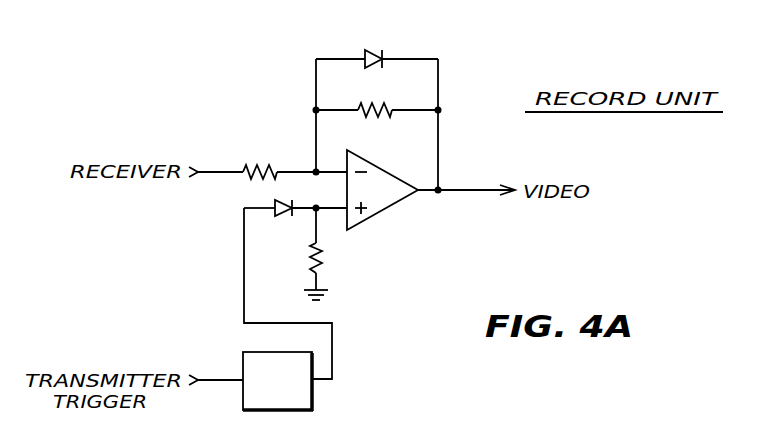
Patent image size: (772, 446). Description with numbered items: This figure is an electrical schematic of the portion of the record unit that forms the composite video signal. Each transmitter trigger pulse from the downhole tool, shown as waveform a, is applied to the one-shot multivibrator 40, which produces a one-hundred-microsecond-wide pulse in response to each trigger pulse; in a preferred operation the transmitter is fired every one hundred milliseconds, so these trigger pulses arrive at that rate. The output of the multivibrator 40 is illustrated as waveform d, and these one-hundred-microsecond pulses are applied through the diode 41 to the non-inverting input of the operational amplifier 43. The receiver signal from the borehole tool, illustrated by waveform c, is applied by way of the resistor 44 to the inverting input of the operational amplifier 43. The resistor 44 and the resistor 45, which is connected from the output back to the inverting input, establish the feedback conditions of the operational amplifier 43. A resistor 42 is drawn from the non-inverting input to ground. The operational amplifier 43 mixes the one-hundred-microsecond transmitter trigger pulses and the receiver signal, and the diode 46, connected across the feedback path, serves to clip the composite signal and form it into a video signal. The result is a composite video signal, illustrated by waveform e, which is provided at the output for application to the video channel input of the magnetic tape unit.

The one-shot multivibrator 40 is at (312, 397).
The diode 41 is at (282, 215).
The resistor 42 is at (323, 255).
The operational amplifier 43 is at (393, 207).
The resistor 44 is at (262, 166).
The resistor 45 is at (373, 115).
The diode 46 is at (375, 50).
The transmitter trigger pulse waveform a is at (225, 380).
The receiver signal waveform c is at (224, 172).
The multivibrator output waveform d is at (334, 338).
The composite video signal waveform e is at (455, 188).